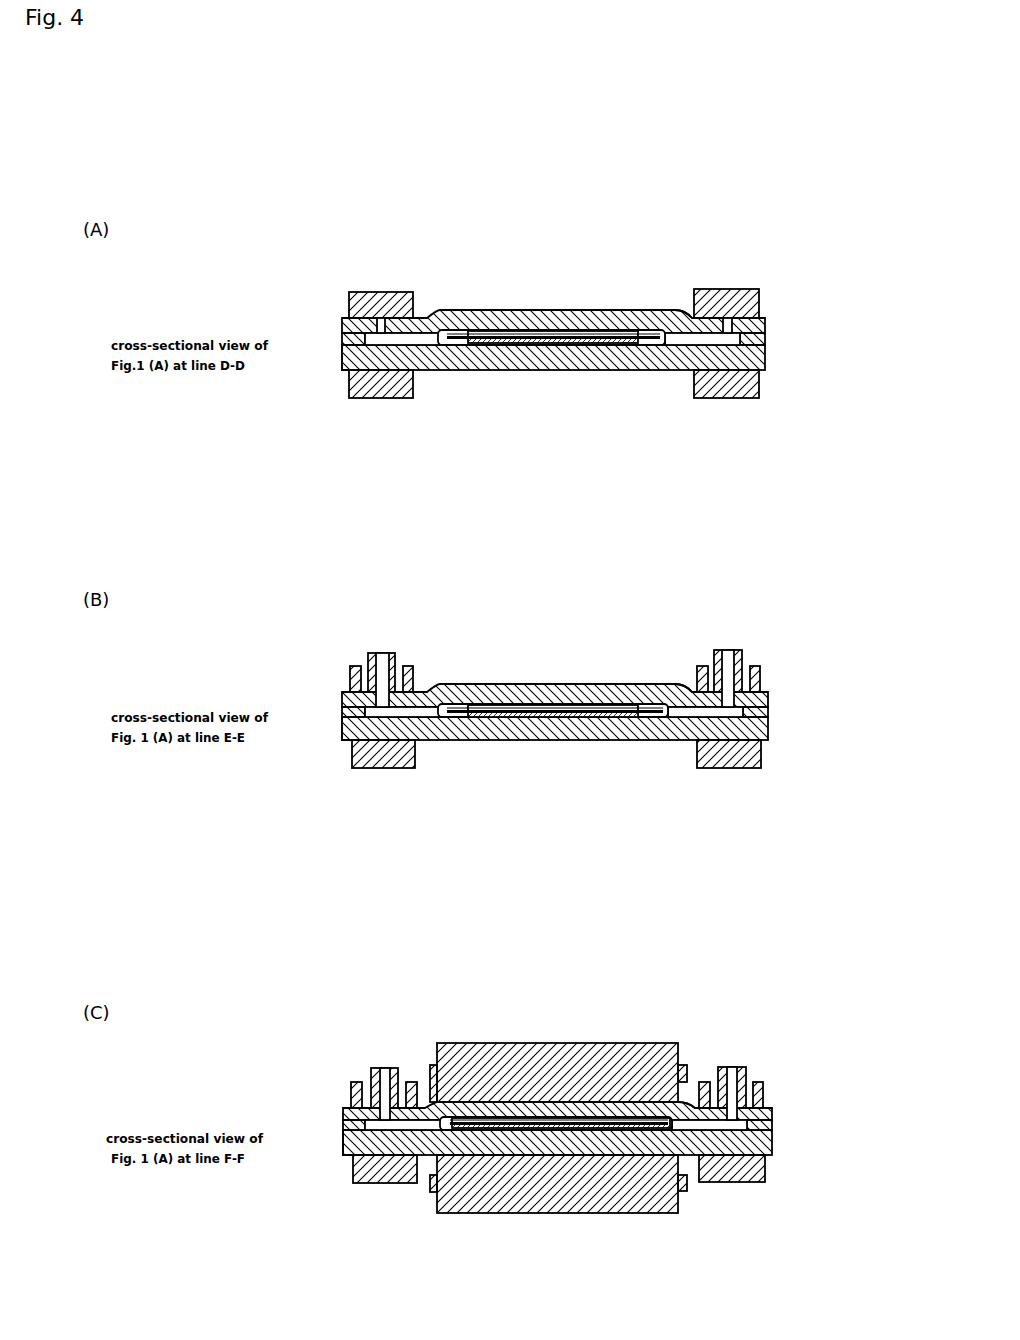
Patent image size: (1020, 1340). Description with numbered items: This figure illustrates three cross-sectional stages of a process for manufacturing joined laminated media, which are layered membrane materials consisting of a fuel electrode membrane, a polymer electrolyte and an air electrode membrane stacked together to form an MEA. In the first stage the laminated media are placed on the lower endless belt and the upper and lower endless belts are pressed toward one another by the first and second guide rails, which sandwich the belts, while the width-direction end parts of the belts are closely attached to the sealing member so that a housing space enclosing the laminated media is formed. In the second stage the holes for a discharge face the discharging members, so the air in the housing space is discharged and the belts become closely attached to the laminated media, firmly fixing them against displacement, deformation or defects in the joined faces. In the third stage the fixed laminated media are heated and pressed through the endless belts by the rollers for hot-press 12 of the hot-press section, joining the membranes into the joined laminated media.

The rollers for hot-press section 12 is at (448, 1043).